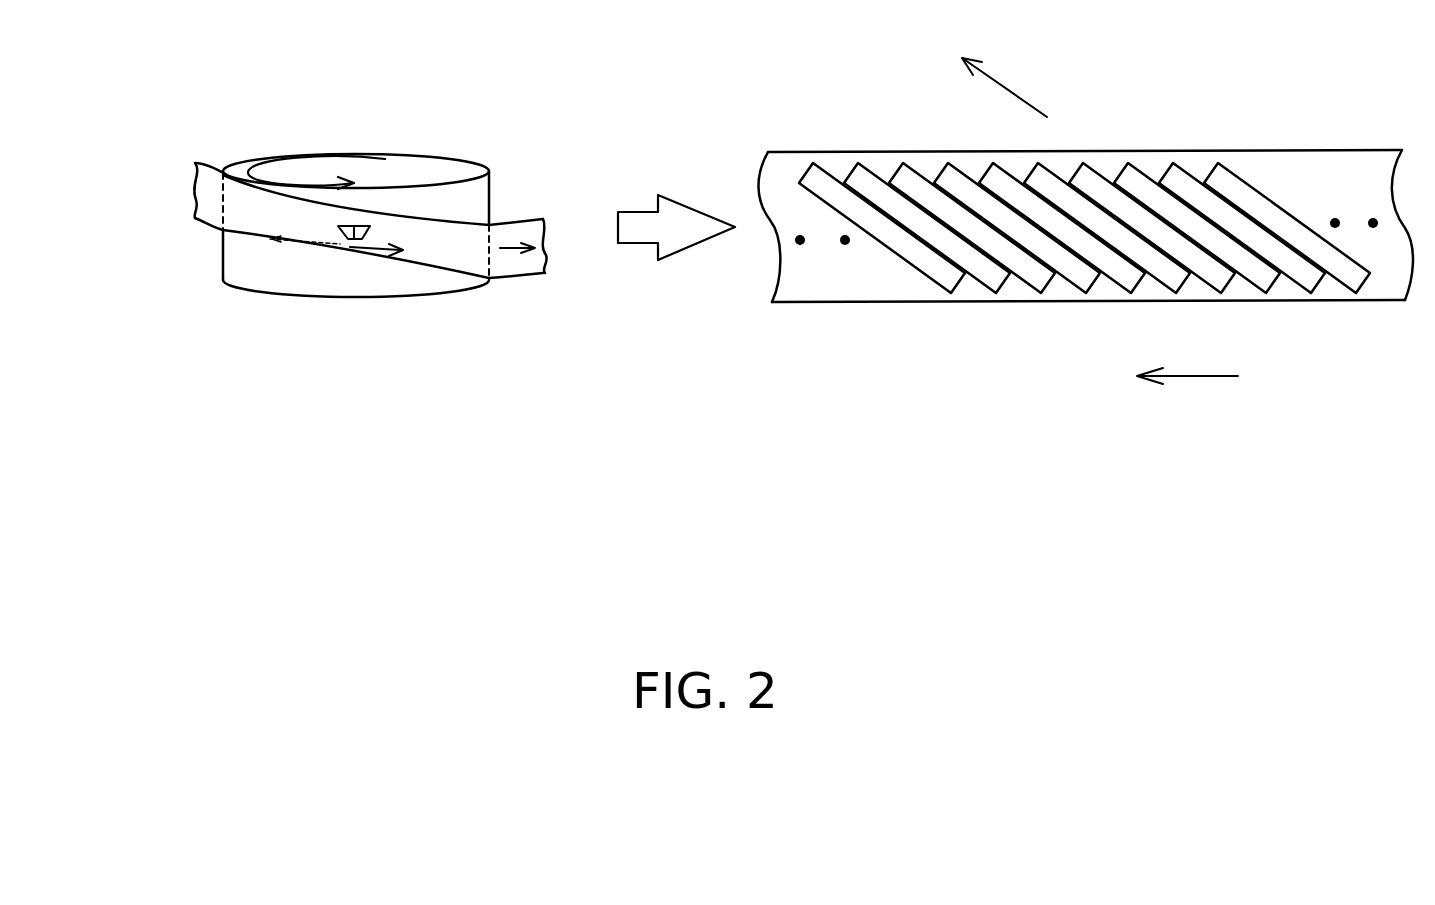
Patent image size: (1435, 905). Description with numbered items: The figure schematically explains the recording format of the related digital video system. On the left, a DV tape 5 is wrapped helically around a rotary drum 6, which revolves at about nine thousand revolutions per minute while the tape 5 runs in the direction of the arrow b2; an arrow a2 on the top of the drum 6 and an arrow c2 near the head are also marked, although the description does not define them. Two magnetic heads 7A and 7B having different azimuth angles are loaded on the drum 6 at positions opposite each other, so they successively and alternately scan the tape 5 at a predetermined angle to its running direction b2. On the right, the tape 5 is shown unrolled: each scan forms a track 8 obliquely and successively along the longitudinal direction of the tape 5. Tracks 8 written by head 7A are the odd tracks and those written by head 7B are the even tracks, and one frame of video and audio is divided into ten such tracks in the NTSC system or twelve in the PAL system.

The DV tape 5 is at (199, 189).
The rotary drum 6 is at (416, 162).
The magnetic head 7A is at (345, 290).
The magnetic head 7B is at (347, 243).
The track 8 is at (297, 242).
The drum rotation direction a2 is at (313, 157).
The arrow b2 is at (1195, 406).
The head scanning direction c2 is at (382, 258).